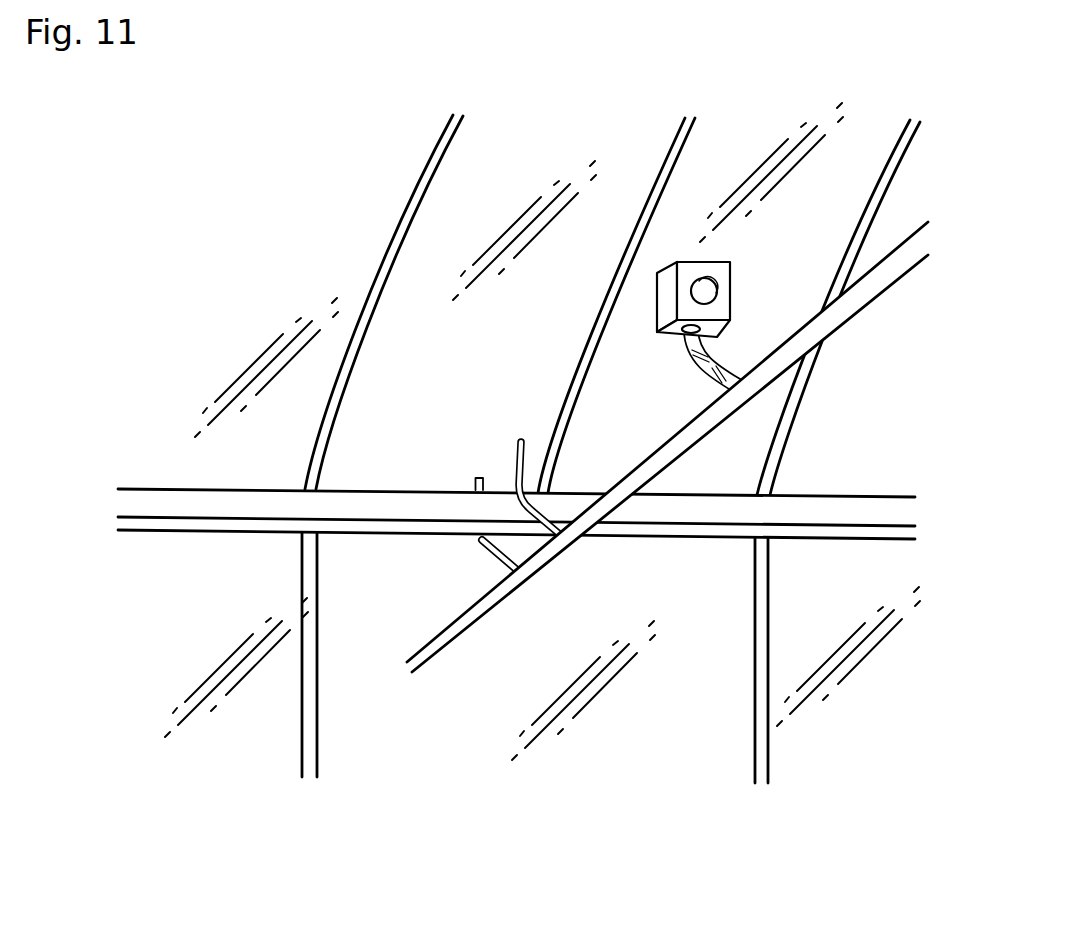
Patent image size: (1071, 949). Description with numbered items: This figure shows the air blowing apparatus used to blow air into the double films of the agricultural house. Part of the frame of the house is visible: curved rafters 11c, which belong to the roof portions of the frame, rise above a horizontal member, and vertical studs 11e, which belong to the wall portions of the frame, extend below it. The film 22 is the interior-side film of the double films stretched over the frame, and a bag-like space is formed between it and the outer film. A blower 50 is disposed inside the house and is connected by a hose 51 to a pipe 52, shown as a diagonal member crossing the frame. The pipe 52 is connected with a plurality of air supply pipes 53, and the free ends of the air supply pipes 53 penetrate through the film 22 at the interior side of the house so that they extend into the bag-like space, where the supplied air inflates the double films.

The rafters 11c is at (418, 180).
The studs 11e is at (302, 736).
The film 22 is at (422, 400).
The blower 50 is at (720, 268).
The hose 51 is at (712, 365).
The pipe 52 is at (700, 440).
The air supply pipes 53 is at (517, 442).